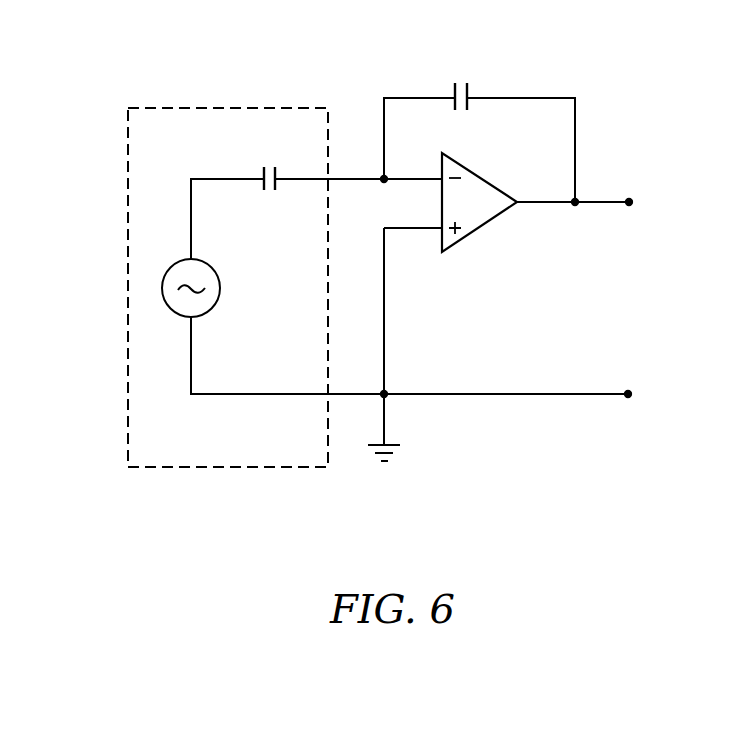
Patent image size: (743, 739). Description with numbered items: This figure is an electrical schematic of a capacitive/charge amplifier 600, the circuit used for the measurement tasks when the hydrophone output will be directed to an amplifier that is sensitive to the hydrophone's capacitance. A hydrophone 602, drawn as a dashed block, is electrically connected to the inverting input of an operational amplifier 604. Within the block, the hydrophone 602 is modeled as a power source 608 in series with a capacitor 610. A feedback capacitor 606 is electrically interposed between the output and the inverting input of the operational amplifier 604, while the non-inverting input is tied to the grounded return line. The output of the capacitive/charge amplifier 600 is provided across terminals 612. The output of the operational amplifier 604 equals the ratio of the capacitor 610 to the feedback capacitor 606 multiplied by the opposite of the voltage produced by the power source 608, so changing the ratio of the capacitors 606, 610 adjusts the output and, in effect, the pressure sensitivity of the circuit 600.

The capacitive/charge amplifier 600 is at (614, 133).
The hydrophone 602 is at (255, 467).
The operational amplifier 604 is at (488, 222).
The feedback capacitor 606 is at (470, 94).
The power source 608 is at (217, 297).
The capacitor 610 is at (263, 172).
The terminals 612 is at (632, 200).